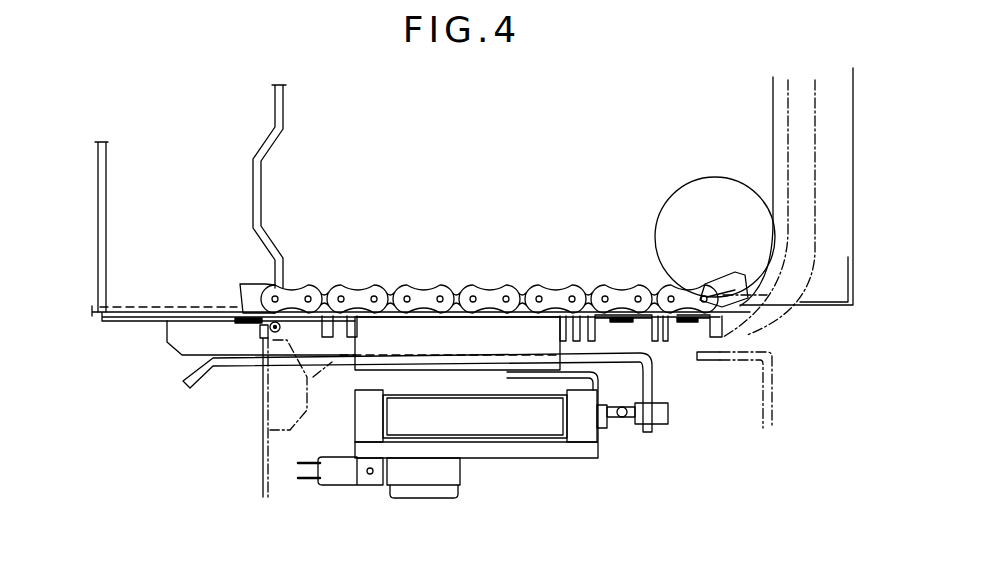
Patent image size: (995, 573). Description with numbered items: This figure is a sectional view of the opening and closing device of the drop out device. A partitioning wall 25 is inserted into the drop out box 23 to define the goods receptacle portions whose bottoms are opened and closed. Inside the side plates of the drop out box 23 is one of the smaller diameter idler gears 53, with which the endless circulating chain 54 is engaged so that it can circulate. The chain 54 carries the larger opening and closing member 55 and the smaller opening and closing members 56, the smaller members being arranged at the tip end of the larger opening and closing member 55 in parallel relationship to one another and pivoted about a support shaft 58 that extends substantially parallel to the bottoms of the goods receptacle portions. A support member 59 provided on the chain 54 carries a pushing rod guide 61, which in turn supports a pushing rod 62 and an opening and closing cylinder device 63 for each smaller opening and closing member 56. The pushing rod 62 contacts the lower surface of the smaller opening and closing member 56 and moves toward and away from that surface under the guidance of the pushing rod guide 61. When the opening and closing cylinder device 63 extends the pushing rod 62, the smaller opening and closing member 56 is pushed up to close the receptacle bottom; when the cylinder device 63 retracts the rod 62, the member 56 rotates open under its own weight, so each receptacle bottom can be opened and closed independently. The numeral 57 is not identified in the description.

The drop out box 23 is at (853, 240).
The partitioning wall 25 is at (96, 262).
The smaller diameter idler gear 53 is at (712, 190).
The endless circulating chain 54 is at (520, 283).
The larger opening and closing member 55 is at (667, 337).
The smaller opening and closing member 56 is at (127, 323).
The rod 57 is at (293, 287).
The support shaft 58 is at (262, 326).
The support member 59 is at (390, 320).
The pushing rod guide 61 is at (455, 374).
The pushing rod 62 is at (237, 364).
The opening and closing cylinder device 63 is at (540, 427).